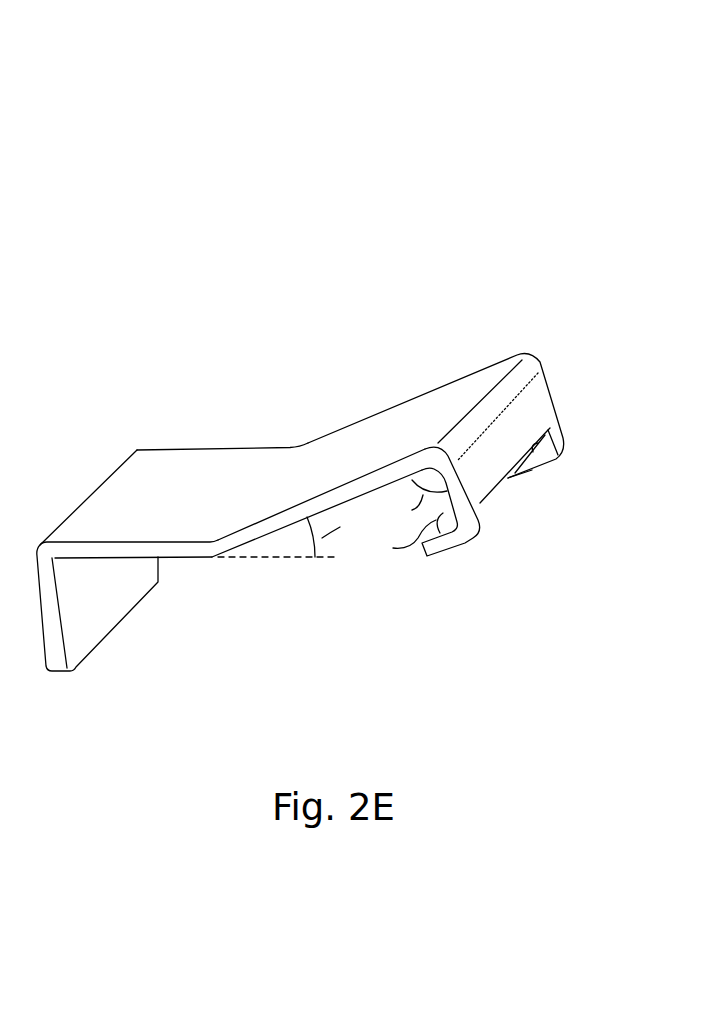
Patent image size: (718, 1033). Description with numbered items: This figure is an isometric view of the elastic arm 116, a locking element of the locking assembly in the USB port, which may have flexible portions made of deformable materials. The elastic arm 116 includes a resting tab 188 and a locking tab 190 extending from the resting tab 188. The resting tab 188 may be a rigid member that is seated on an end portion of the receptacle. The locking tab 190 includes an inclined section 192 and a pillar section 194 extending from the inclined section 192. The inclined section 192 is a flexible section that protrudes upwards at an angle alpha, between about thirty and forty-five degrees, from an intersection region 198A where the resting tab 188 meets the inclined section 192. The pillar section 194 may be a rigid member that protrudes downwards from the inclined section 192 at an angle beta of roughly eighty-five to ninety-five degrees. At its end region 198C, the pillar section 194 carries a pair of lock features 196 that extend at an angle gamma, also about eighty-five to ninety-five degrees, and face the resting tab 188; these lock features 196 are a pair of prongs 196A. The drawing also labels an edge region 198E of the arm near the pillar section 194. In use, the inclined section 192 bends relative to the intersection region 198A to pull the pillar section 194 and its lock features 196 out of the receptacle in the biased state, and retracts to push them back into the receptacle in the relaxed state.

The elastic arm 116 is at (168, 280).
The resting tab 188 is at (155, 480).
The locking tab 190 is at (390, 436).
The inclined section 192 is at (440, 407).
The pillar section 194 is at (533, 403).
The pair of lock features 196 is at (444, 545).
The pair of prongs 196A is at (520, 473).
The intersection region 198A is at (260, 480).
The end region 198C is at (527, 465).
The hook edge 198E is at (513, 385).